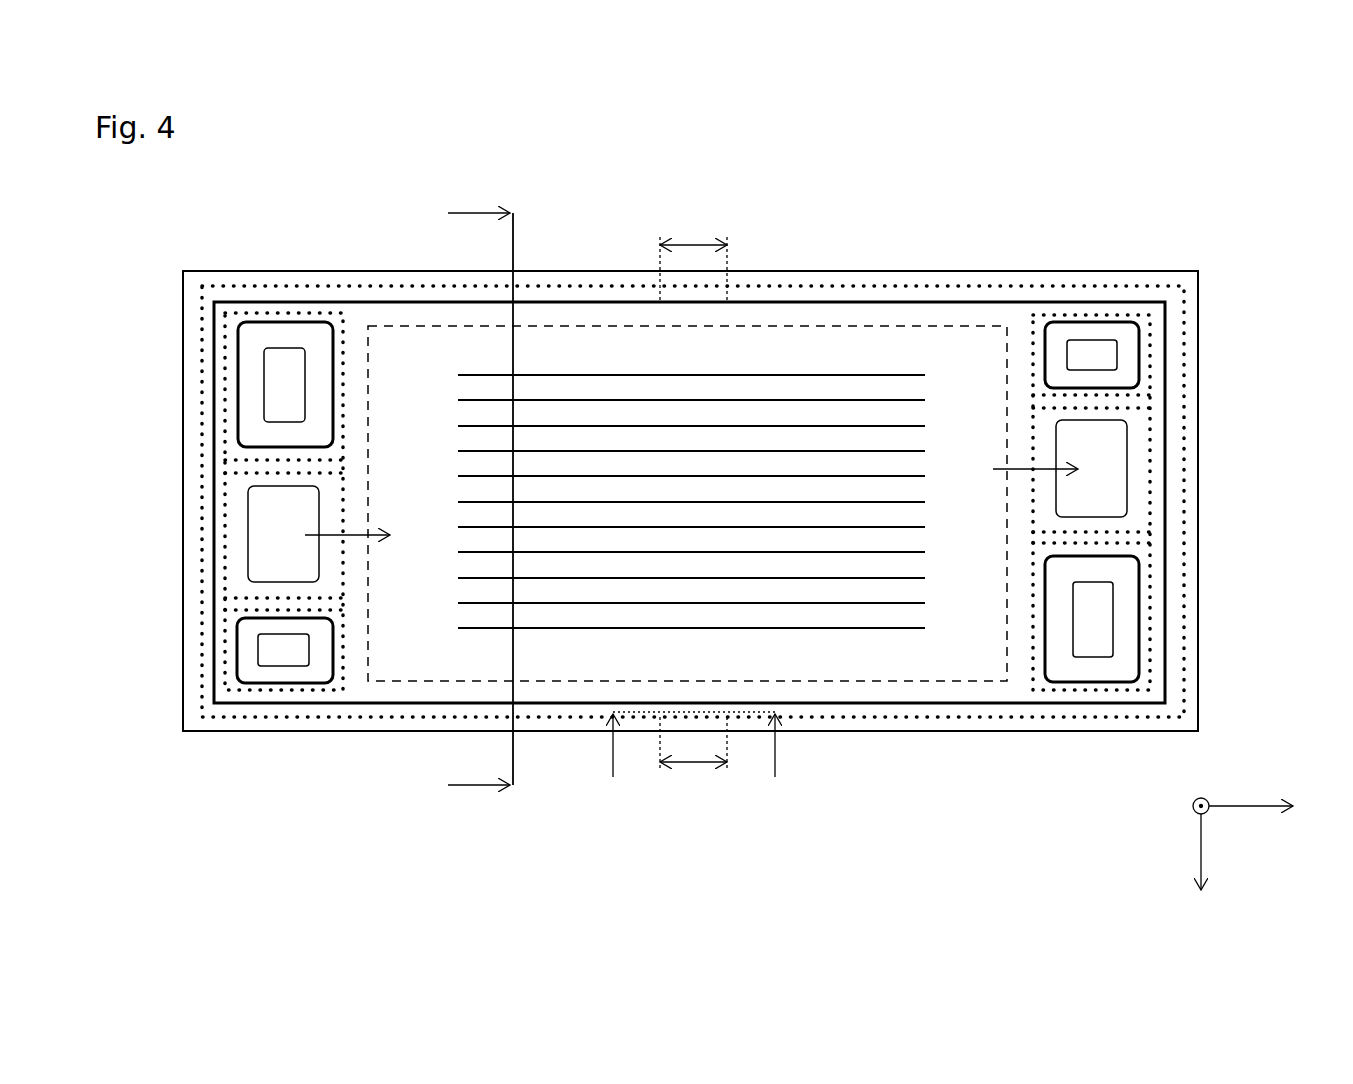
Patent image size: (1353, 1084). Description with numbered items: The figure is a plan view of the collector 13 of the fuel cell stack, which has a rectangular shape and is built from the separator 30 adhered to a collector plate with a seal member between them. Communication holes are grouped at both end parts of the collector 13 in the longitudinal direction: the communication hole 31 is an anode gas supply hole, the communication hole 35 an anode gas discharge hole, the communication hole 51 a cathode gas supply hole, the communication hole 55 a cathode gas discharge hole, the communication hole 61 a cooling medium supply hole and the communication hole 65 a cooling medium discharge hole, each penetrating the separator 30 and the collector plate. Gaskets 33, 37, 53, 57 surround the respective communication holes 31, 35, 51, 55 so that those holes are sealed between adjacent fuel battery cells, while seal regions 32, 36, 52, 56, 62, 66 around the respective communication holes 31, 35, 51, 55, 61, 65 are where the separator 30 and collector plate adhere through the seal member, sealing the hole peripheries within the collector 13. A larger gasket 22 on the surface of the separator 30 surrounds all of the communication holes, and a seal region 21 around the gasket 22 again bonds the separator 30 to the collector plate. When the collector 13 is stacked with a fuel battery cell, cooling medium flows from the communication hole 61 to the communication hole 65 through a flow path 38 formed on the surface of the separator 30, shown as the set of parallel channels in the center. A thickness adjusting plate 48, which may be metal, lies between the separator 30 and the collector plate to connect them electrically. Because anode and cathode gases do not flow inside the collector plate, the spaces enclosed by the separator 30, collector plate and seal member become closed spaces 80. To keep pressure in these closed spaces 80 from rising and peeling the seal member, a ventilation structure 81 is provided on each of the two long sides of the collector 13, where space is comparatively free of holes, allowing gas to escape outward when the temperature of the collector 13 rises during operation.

The collector 13 is at (1207, 145).
The seal region 21 is at (925, 735).
The gasket 22 is at (862, 704).
The separator 30 is at (1198, 271).
The communication hole 31 is at (1108, 356).
The seal region 32 is at (1012, 320).
The gasket 33 is at (1167, 286).
The communication hole 35 is at (272, 657).
The seal region 36 is at (348, 735).
The gasket 37 is at (210, 713).
The flow path 38 is at (840, 375).
The thickness adjusting plate 48 is at (905, 300).
The communication hole 51 is at (209, 316).
The seal region 52 is at (370, 330).
The gasket 53 is at (238, 366).
The communication hole 55 is at (1096, 650).
The seal region 56 is at (1035, 700).
The gasket 57 is at (1170, 678).
The communication hole 61 is at (270, 533).
The seal region 62 is at (205, 546).
The communication hole 65 is at (1105, 470).
The seal region 66 is at (1165, 489).
The closed space 80 is at (571, 688).
The ventilation structure 81 is at (692, 243).